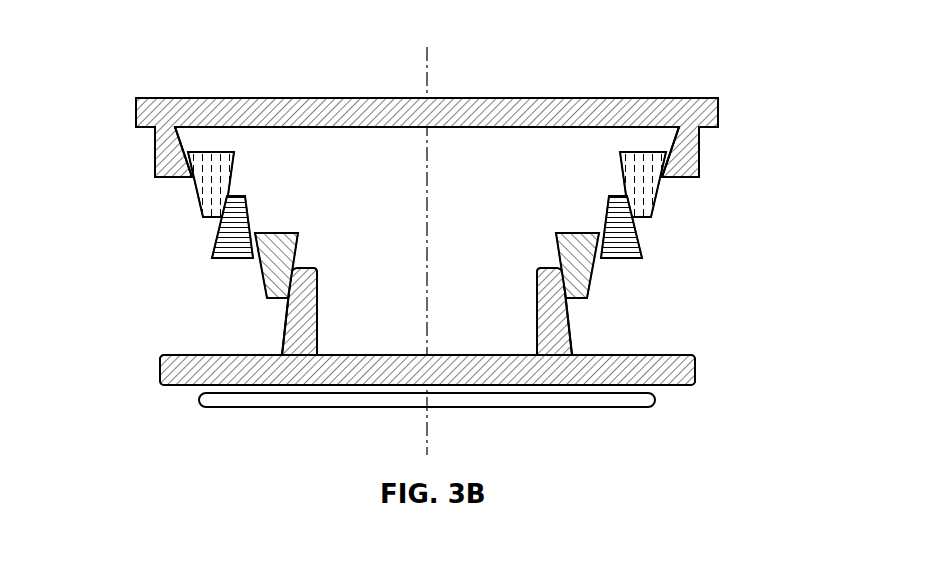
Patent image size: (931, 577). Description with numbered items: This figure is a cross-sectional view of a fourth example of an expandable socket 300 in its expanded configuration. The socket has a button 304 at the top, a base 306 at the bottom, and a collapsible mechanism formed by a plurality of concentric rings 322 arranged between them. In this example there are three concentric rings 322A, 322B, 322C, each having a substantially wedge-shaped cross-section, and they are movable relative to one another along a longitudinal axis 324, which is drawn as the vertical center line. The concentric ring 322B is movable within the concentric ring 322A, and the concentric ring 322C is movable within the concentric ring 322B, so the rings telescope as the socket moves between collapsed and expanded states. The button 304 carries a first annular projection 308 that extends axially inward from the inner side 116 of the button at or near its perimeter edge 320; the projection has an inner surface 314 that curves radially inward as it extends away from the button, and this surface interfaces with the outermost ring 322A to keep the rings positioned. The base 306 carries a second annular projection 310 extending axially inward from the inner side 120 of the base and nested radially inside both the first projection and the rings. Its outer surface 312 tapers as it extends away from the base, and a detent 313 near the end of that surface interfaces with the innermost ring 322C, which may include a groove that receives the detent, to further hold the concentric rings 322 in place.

The inner side of the button 116 is at (203, 124).
The inner side of the base 120 is at (181, 354).
The expandable socket 300 is at (542, 87).
The button 304 is at (346, 97).
The base 306 is at (160, 371).
The first annular projection 308 is at (155, 139).
The second annular projection 310 is at (318, 308).
The outer surface of the second projection 312 is at (283, 339).
The detent 313 is at (312, 270).
The inner surface of the first projection 314 is at (185, 168).
The perimeter edge of the button 320 is at (136, 112).
The concentric rings 322 is at (422, 223).
The first concentric ring 322A is at (233, 171).
The second concentric ring 322B is at (248, 216).
The third concentric ring 322C is at (298, 249).
The longitudinal axis 324 is at (428, 56).